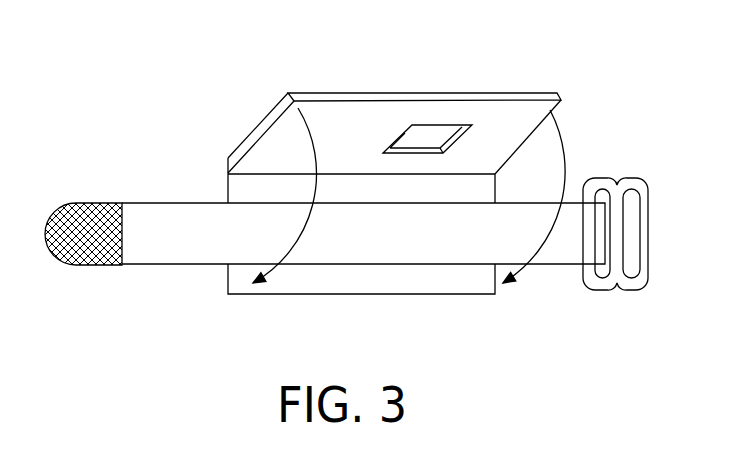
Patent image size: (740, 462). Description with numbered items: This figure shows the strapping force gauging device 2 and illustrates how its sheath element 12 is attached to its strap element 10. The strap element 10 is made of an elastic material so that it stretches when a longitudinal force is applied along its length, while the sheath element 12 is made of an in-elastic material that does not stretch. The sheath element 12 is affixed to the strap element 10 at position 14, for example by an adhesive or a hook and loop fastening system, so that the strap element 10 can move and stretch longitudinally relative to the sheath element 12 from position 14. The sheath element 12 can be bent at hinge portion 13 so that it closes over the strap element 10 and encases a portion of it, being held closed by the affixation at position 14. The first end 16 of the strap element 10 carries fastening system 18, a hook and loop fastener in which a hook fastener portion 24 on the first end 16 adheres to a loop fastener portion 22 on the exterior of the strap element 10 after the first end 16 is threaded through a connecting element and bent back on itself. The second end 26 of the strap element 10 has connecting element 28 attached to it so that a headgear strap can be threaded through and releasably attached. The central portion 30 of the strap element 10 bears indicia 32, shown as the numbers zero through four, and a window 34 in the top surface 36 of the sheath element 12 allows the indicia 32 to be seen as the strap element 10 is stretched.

The strapping force gauging device 2 is at (396, 159).
The strap element 10 is at (371, 229).
The sheath element 12 is at (312, 98).
The hinge portion 13 is at (495, 174).
The position 14 is at (228, 230).
The first end 16 is at (84, 237).
The fastening system 18 is at (84, 201).
The loop fastener portion 22 is at (148, 218).
The hook fastener portion 24 is at (105, 208).
The second end 26 is at (585, 247).
The connecting element 28 is at (630, 187).
The central portion 30 is at (448, 235).
The indicia 32 is at (333, 247).
The window 34 is at (430, 137).
The top surface 36 is at (363, 137).